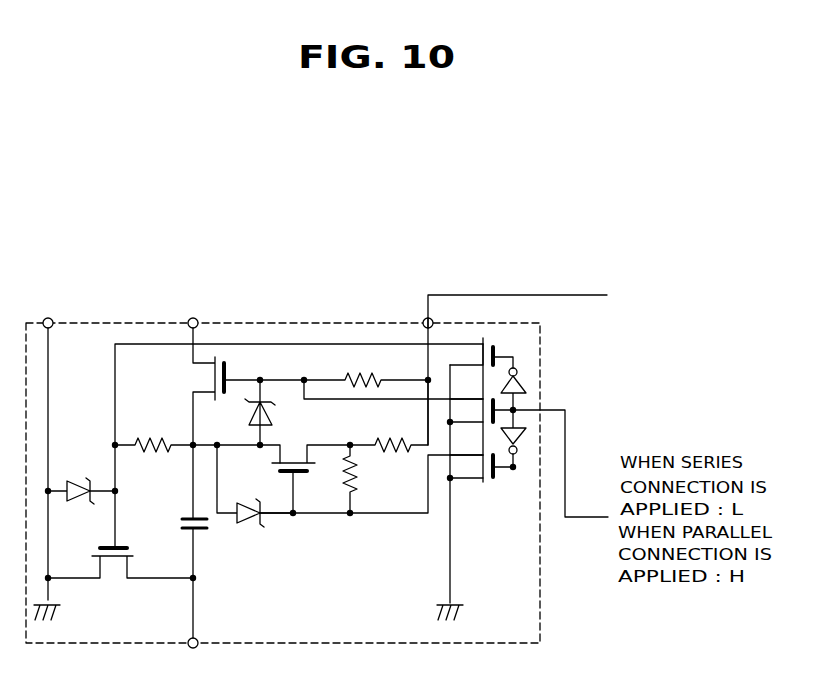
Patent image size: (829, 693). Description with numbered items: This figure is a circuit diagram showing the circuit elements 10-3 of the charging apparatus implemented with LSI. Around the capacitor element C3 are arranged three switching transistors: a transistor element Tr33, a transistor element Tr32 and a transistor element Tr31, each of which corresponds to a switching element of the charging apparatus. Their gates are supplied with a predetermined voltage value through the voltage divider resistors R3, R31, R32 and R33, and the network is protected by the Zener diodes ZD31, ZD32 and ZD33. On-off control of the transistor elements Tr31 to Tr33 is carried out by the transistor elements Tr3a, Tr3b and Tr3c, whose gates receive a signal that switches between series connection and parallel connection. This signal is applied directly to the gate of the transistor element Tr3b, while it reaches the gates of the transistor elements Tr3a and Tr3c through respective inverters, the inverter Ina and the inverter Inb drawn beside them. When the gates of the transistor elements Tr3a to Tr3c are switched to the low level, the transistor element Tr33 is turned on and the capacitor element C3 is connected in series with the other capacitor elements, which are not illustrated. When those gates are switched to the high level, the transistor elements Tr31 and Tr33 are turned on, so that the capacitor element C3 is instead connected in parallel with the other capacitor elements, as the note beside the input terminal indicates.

The circuit elements 10-3 is at (292, 323).
The Zener diode ZD31 is at (81, 478).
The voltage divider resistor R31 is at (154, 434).
The transistor element Tr33 is at (208, 386).
The Zener diode ZD33 is at (286, 412).
The voltage divider resistor R33 is at (366, 372).
The voltage divider resistor R3 is at (389, 416).
The voltage divider resistor R32 is at (371, 479).
The transistor element Tr32 is at (307, 477).
The Zener diode ZD32 is at (255, 499).
The capacitor element C3 is at (177, 511).
The transistor element Tr31 is at (120, 534).
The transistor element Tr3a is at (493, 350).
The transistor element Tr3b is at (473, 399).
The transistor element Tr3c is at (493, 478).
The inverter Ina is at (519, 379).
The inverter Inb is at (518, 448).